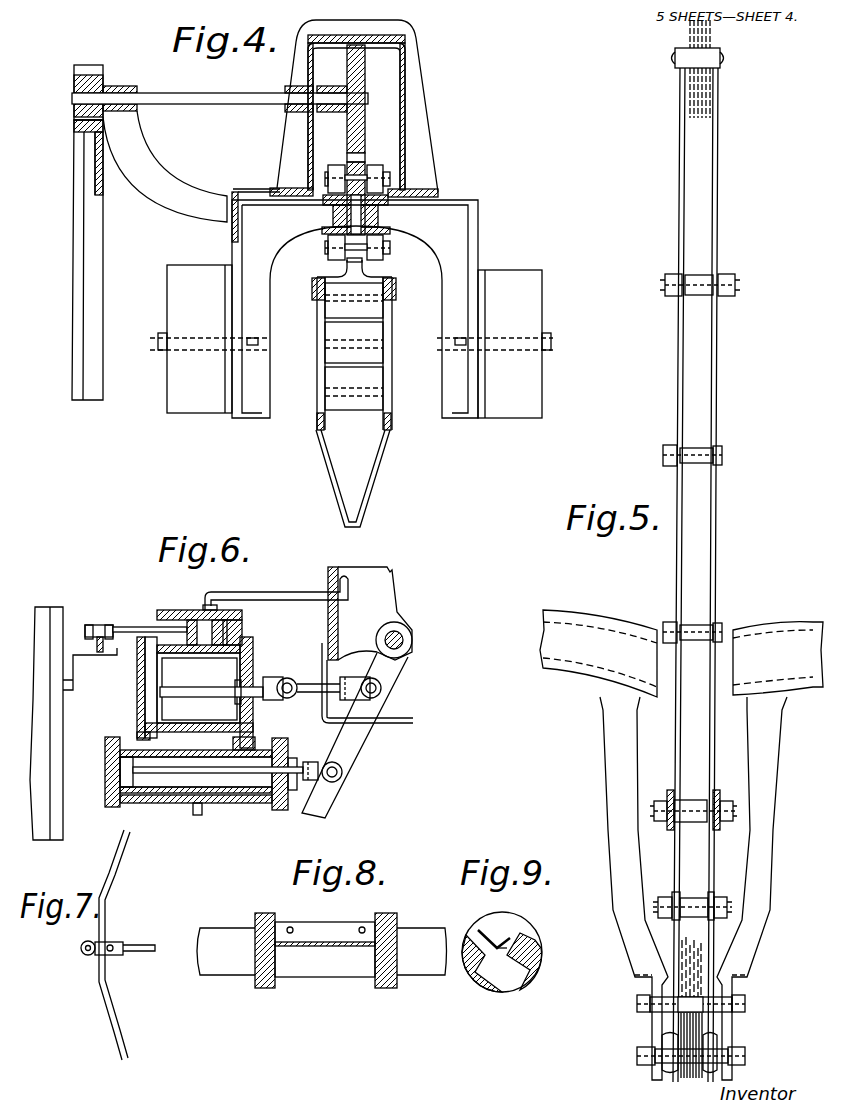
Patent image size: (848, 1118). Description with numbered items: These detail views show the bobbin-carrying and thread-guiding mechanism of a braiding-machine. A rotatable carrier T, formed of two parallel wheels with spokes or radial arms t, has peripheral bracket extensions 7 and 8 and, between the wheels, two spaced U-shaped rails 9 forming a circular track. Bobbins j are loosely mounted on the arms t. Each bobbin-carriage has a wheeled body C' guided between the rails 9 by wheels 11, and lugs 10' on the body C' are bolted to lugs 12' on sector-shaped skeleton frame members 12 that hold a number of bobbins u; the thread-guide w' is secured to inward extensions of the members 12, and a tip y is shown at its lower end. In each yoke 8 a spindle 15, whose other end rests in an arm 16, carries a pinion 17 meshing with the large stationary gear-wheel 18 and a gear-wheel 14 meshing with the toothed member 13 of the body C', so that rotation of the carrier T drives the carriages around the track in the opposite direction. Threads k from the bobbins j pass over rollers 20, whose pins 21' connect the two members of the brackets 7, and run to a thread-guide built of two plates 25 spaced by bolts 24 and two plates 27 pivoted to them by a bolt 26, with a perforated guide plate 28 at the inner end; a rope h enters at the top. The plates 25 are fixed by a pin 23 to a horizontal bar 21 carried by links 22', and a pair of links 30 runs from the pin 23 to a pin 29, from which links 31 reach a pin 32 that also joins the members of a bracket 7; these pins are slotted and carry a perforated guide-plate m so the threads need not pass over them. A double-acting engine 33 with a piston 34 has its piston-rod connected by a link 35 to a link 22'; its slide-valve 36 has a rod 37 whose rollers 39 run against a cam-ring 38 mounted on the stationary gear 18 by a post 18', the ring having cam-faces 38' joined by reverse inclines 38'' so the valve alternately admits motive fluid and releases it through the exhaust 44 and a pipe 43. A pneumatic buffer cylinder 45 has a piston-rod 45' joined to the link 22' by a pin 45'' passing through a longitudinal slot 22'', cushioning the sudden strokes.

In FIG. 5, the peripheral bracket extension 7 is at (625, 950).
In FIG. 4, the peripheral bracket extension 8 is at (410, 92).
In FIG. 4, the rail 9 is at (322, 200).
In FIG. 5, the rail 9 is at (681, 653).
In FIG. 4, the lug 10' is at (354, 278).
In FIG. 4, the wheel 11 is at (332, 168).
In FIG. 4, the skeleton frame member 12 is at (354, 353).
In FIG. 4, the radial extension or lug 12' is at (339, 288).
In FIG. 4, the toothed member 13 is at (365, 152).
In FIG. 4, the gear-wheel 14 is at (366, 82).
In FIG. 4, the spindle 15 is at (226, 105).
In FIG. 4, the arm 16 is at (150, 163).
In FIG. 4, the pinion 17 is at (95, 66).
In FIG. 4, the stationary gear-wheel 18 is at (103, 260).
In FIG. 6, the post 18' is at (65, 723).
In FIG. 5, the roller 20 is at (680, 1038).
In FIG. 5, the horizontal bar 21 is at (707, 842).
In FIG. 5, the pin 21' is at (671, 1053).
In FIG. 6, the link 22' is at (367, 752).
In FIG. 6, the longitudinal slot 22'' is at (378, 772).
In FIG. 5, the pin 23 is at (692, 800).
In FIG. 5, the bolt 24 is at (690, 448).
In FIG. 5, the plate 25 is at (712, 524).
In FIG. 5, the bolt 26 is at (700, 284).
In FIG. 5, the plate 27 is at (711, 170).
In FIG. 5, the thread-guide plate 28 is at (676, 52).
In FIG. 5, the pin 29 is at (695, 897).
In FIG. 8, the pin 29 is at (322, 950).
In FIG. 9, the pin 29 is at (528, 946).
In FIG. 5, the link 30 is at (712, 864).
In FIG. 5, the link 31 is at (712, 956).
In FIG. 5, the pin 32 is at (748, 1003).
In FIG. 6, the double-acting engine 33 is at (195, 692).
In FIG. 6, the piston 34 is at (203, 686).
In FIG. 6, the link 35 is at (312, 696).
In FIG. 6, the slide-valve 36 is at (200, 622).
In FIG. 6, the valve rod 37 is at (132, 627).
In FIG. 7, the valve rod 37 is at (145, 953).
In FIG. 6, the cam-ring 38 is at (91, 669).
In FIG. 7, the cam-ring 38 is at (125, 945).
In FIG. 7, the cam-face 38' is at (75, 956).
In FIG. 7, the reverse incline 38'' is at (127, 968).
In FIG. 6, the roller 39 is at (93, 626).
In FIG. 7, the roller 39 is at (110, 942).
In FIG. 6, the pipe 43 is at (278, 591).
In FIG. 6, the exhaust 44 is at (211, 679).
In FIG. 6, the buffer cylinder 45 is at (201, 785).
In FIG. 6, the piston rod 45' is at (231, 795).
In FIG. 6, the pin 45'' is at (369, 794).
In FIG. 4, the carrier T is at (236, 238).
In FIG. 4, the wheeled body C' is at (403, 248).
In FIG. 4, the bobbin j is at (354, 341).
In FIG. 4, the radial arm t is at (352, 382).
In FIG. 6, the radial arm t is at (328, 628).
In FIG. 4, the bobbin u is at (392, 292).
In FIG. 4, the thread-guide w' is at (362, 478).
In FIG. 4, the tip y is at (358, 527).
In FIG. 5, the rope h is at (712, 32).
In FIG. 5, the thread k is at (705, 1025).
In FIG. 8, the perforated guide-plate m is at (336, 947).
In FIG. 9, the perforated guide-plate m is at (488, 930).